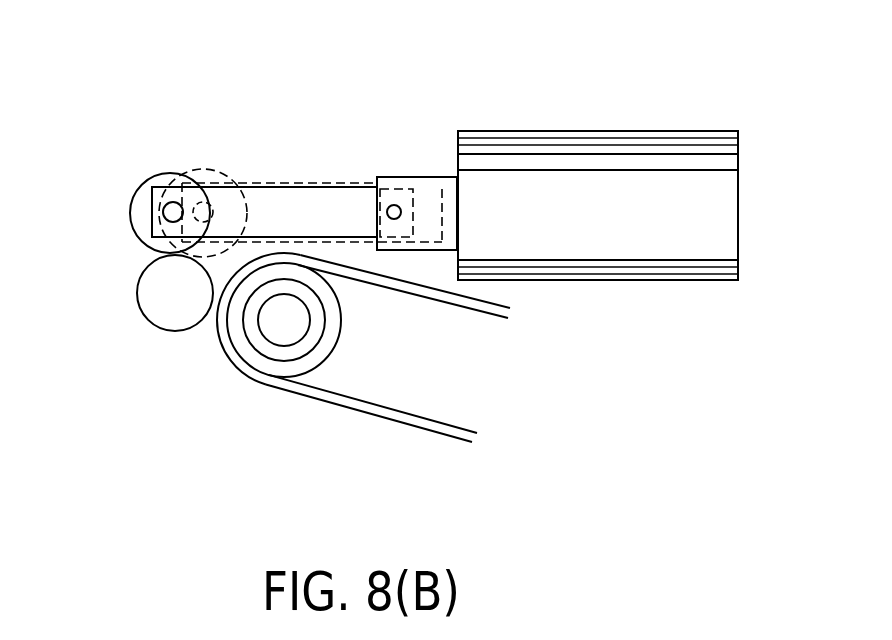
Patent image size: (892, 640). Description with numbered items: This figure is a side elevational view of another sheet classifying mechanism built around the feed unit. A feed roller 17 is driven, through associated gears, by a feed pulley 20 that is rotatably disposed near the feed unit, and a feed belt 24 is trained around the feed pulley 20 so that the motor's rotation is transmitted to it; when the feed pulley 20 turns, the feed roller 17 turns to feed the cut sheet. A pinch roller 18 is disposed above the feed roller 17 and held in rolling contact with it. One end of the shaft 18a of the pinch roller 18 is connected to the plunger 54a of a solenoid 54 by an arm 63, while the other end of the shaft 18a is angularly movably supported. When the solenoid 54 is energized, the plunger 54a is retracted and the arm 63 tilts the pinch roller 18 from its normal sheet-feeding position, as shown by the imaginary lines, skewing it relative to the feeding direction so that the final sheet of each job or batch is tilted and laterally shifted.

The feed roller 17 is at (148, 308).
The pinch roller 18 is at (140, 220).
The shaft 18a is at (163, 210).
The feed pulley 20 is at (252, 357).
The feed belt 24 is at (378, 410).
The solenoid 54 is at (611, 130).
The plunger 54a is at (417, 177).
The arm 63 is at (293, 205).